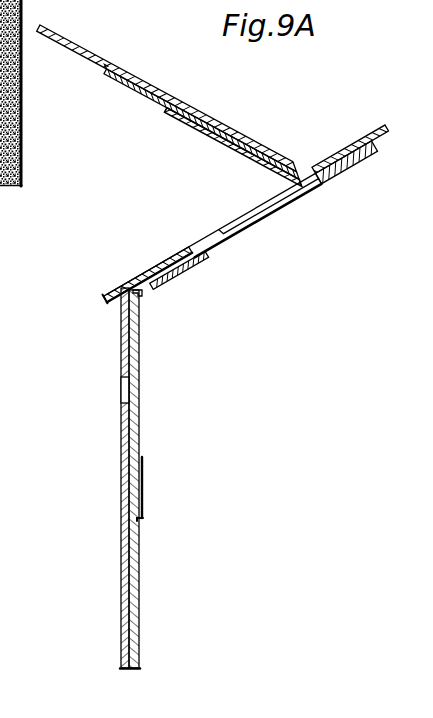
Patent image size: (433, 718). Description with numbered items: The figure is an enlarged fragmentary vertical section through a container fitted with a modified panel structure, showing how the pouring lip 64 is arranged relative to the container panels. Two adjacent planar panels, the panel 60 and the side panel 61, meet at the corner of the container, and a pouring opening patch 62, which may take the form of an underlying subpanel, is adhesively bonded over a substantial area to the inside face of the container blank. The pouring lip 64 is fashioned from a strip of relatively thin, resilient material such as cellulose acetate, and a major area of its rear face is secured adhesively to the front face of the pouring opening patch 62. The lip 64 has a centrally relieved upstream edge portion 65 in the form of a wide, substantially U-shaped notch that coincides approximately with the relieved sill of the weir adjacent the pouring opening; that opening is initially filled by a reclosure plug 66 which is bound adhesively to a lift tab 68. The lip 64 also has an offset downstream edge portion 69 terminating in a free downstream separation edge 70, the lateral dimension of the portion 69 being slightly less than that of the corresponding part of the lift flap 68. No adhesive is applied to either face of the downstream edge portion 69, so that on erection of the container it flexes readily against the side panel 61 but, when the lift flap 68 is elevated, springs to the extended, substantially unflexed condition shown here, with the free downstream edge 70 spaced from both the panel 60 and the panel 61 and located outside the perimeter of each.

The planar panel 60 is at (238, 212).
The side panel 61 is at (123, 464).
The pouring opening patch 62 is at (137, 477).
The pouring lip 64 is at (162, 281).
The centrally relieved upstream edge portion 65 is at (190, 258).
The reclosure plug 66 is at (192, 129).
The lift tab 68 is at (133, 84).
The offset downstream edge portion 69 is at (114, 288).
The free downstream separation edge 70 is at (100, 303).